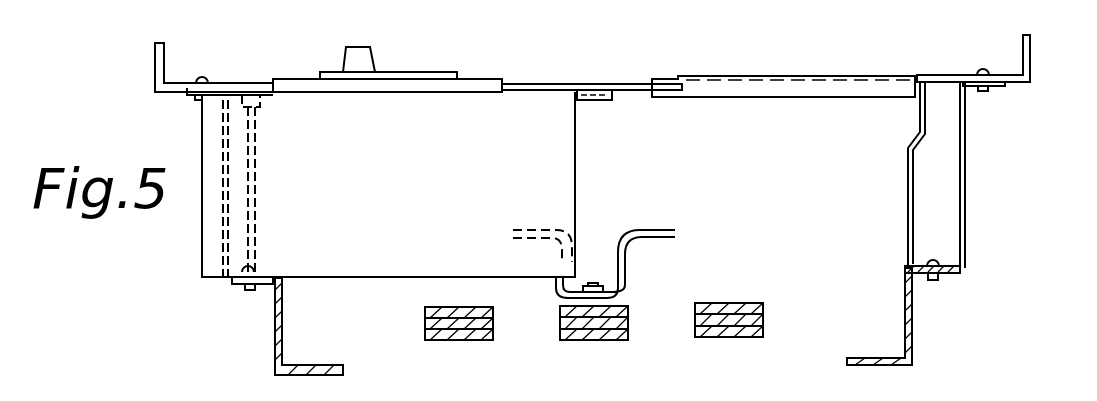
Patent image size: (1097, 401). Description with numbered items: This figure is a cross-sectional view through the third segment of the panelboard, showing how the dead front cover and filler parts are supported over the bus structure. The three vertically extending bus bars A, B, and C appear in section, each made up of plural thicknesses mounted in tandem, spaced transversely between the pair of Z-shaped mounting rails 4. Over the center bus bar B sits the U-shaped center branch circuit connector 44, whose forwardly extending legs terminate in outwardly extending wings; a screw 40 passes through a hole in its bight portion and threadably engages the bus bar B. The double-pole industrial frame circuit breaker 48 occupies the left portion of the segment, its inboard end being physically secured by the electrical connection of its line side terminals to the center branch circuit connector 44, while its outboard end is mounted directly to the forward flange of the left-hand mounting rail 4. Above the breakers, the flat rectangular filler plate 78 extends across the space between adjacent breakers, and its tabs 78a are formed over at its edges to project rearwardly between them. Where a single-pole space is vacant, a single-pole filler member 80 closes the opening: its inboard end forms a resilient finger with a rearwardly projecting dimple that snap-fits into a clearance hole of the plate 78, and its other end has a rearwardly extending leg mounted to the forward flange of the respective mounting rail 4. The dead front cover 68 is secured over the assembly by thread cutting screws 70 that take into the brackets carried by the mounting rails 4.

The mounting rail 4 is at (275, 331).
The screw 40 is at (594, 283).
The branch circuit connector 44 is at (630, 263).
The double-pole industrial frame circuit breaker 48 is at (398, 187).
The dead front cover 68 is at (1033, 48).
The thread cutting screw 70 is at (985, 72).
The filler plate 78 is at (632, 90).
The tab 78a is at (595, 100).
The single-pole filler member 80 is at (787, 80).
The bus bar A is at (459, 343).
The bus bar B is at (597, 343).
The bus bar C is at (740, 340).